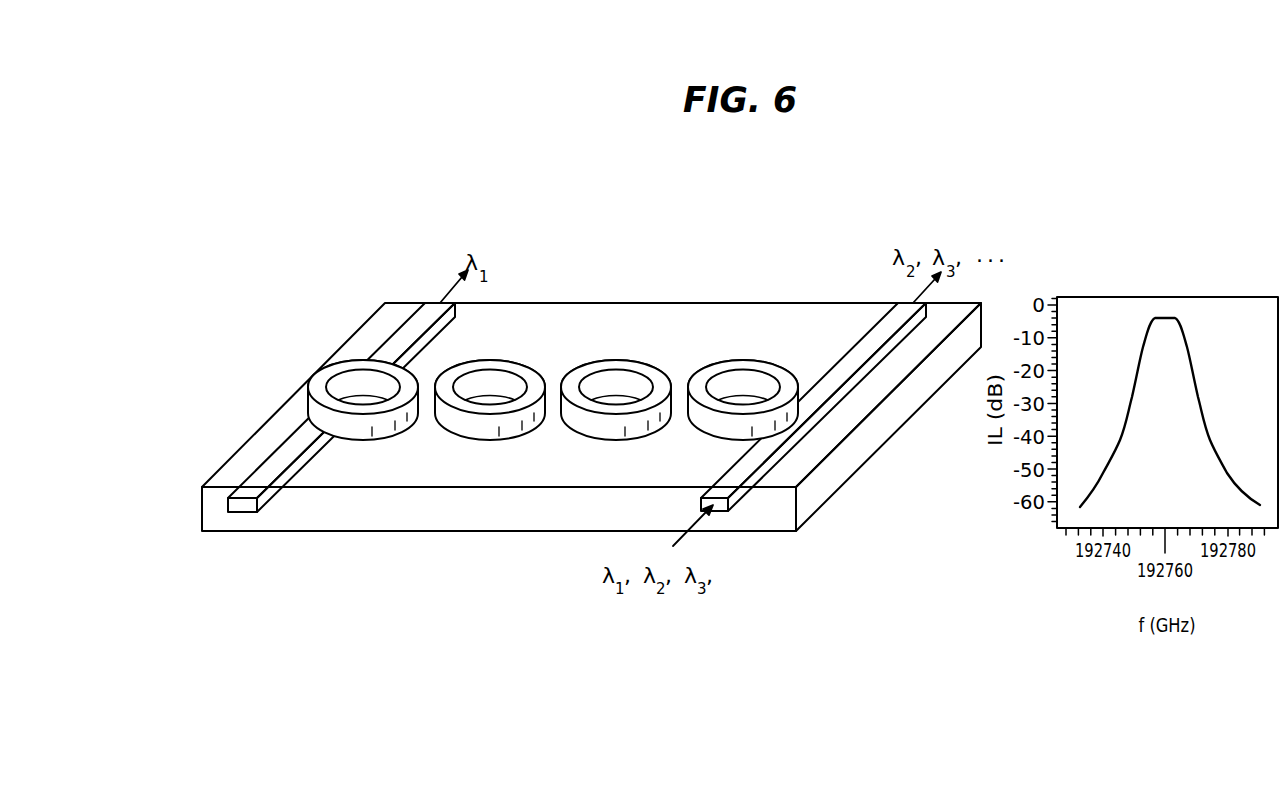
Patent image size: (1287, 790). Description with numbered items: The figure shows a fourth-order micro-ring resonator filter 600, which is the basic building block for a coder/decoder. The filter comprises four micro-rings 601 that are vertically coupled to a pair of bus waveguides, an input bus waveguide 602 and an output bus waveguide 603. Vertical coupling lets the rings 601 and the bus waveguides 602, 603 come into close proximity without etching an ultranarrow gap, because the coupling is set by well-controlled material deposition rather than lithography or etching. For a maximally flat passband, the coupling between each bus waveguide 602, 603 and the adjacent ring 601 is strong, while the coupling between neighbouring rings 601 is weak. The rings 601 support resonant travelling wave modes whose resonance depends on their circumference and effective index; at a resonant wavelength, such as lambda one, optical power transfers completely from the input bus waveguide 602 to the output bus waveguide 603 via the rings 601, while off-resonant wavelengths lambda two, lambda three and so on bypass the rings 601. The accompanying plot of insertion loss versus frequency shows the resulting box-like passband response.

The fourth-order micro-ring resonator filter 600 is at (591, 367).
The micro-rings 601 is at (743, 360).
The input bus waveguide 602 is at (743, 499).
The output bus waveguide 603 is at (276, 456).